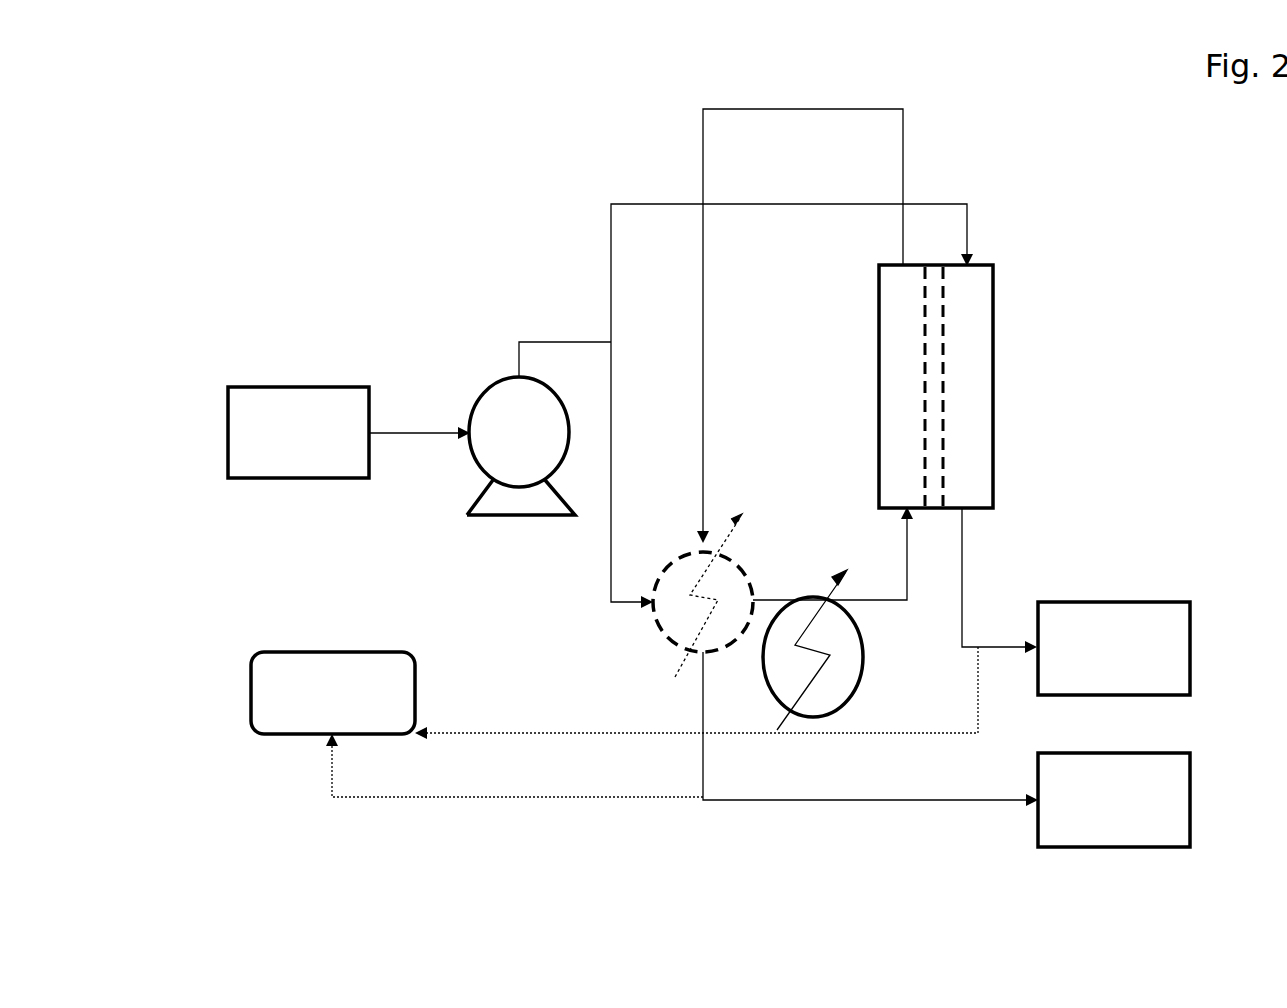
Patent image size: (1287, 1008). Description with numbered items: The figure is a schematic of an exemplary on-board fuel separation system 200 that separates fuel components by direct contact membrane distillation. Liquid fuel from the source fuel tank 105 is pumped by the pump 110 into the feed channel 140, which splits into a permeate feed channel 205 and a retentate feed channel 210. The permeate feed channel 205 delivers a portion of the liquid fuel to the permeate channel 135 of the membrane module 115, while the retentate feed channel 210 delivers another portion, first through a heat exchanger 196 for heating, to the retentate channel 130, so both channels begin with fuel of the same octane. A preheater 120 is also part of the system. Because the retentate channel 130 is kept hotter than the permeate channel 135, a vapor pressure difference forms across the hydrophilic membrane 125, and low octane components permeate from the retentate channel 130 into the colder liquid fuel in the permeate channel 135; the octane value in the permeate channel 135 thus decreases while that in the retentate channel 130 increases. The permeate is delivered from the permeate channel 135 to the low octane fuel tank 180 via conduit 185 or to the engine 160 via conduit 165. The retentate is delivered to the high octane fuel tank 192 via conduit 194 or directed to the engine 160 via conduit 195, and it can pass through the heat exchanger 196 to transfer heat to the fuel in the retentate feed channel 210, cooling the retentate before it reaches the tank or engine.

The on-board fuel separation system 200 is at (190, 78).
The source fuel tank 105 is at (343, 410).
The pump 110 is at (515, 405).
The feed channel 140 is at (565, 342).
The permeate feed channel 205 is at (645, 204).
The conduit 194 is at (777, 113).
The membrane module 115 is at (878, 310).
The membrane 125 is at (938, 296).
The retentate channel 130 is at (890, 457).
The permeate channel 135 is at (982, 457).
The heat exchanger 196 is at (660, 627).
The retentate feed channel 210 is at (600, 583).
The preheater 120 is at (855, 698).
The conduit 185 is at (965, 600).
The low octane fuel tank 180 is at (1120, 620).
The high octane fuel tank 192 is at (1078, 838).
The engine 160 is at (330, 668).
The conduit 165 is at (568, 735).
The conduit 195 is at (440, 797).